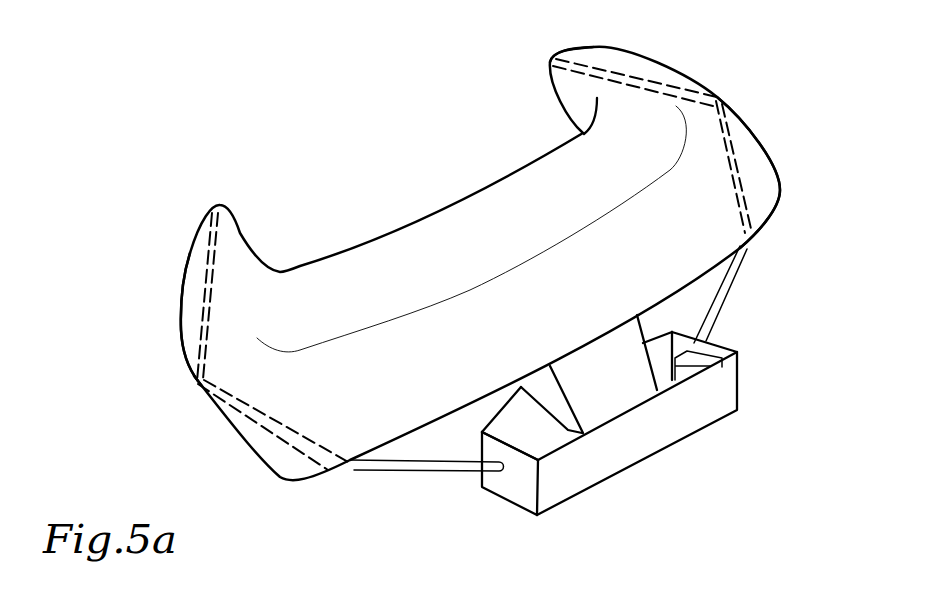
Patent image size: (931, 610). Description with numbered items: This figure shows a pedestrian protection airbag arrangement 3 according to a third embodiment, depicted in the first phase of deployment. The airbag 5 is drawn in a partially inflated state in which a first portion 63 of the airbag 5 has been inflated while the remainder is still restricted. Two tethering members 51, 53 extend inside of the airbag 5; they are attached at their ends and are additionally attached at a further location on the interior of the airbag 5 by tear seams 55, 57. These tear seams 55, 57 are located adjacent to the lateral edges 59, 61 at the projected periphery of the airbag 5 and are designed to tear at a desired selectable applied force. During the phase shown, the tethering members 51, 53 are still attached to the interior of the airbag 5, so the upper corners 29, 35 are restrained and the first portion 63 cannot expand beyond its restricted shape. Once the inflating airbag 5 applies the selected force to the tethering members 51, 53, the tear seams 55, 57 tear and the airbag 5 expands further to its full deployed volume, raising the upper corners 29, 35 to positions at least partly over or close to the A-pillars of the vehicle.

The inflatable restraint assembly 3 is at (272, 128).
The airbag 5 is at (500, 203).
The upper corner 29 is at (222, 205).
The upper corner 35 is at (548, 62).
The tethering member 51 is at (640, 83).
The tethering member 53 is at (250, 413).
The tear seam 55 is at (198, 382).
The tear seam 57 is at (717, 98).
The lateral edge 59 is at (183, 343).
The lateral edge 61 is at (741, 113).
The first portion 63 is at (546, 313).